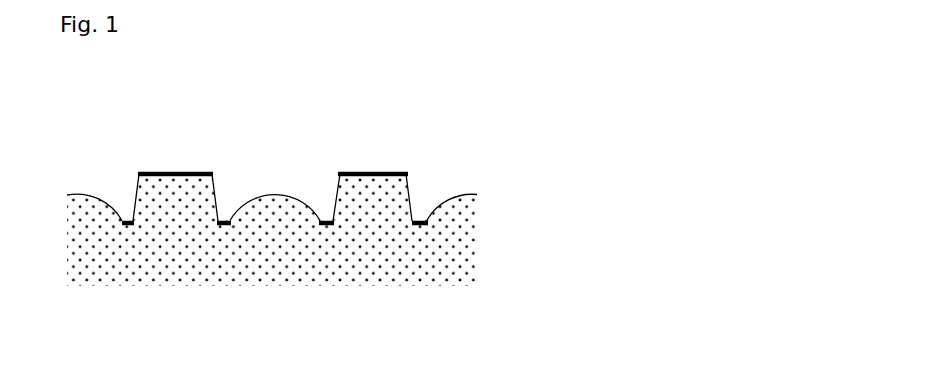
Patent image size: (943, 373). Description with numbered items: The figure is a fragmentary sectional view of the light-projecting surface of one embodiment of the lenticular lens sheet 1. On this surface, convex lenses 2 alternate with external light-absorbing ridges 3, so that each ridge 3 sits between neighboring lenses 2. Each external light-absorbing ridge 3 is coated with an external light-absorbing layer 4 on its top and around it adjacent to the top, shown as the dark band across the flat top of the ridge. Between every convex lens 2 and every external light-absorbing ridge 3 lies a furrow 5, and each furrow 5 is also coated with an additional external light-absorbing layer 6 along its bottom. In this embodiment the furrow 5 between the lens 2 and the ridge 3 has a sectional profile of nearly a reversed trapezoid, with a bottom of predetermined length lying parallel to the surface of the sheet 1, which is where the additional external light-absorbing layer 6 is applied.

The lenticular lens sheet 1 is at (485, 264).
The convex lens 2 is at (274, 211).
The external light-absorbing ridge 3 is at (178, 213).
The external light-absorbing layer 4 is at (153, 170).
The furrow 5 is at (333, 224).
The additional external light-absorbing layer 6 is at (418, 222).